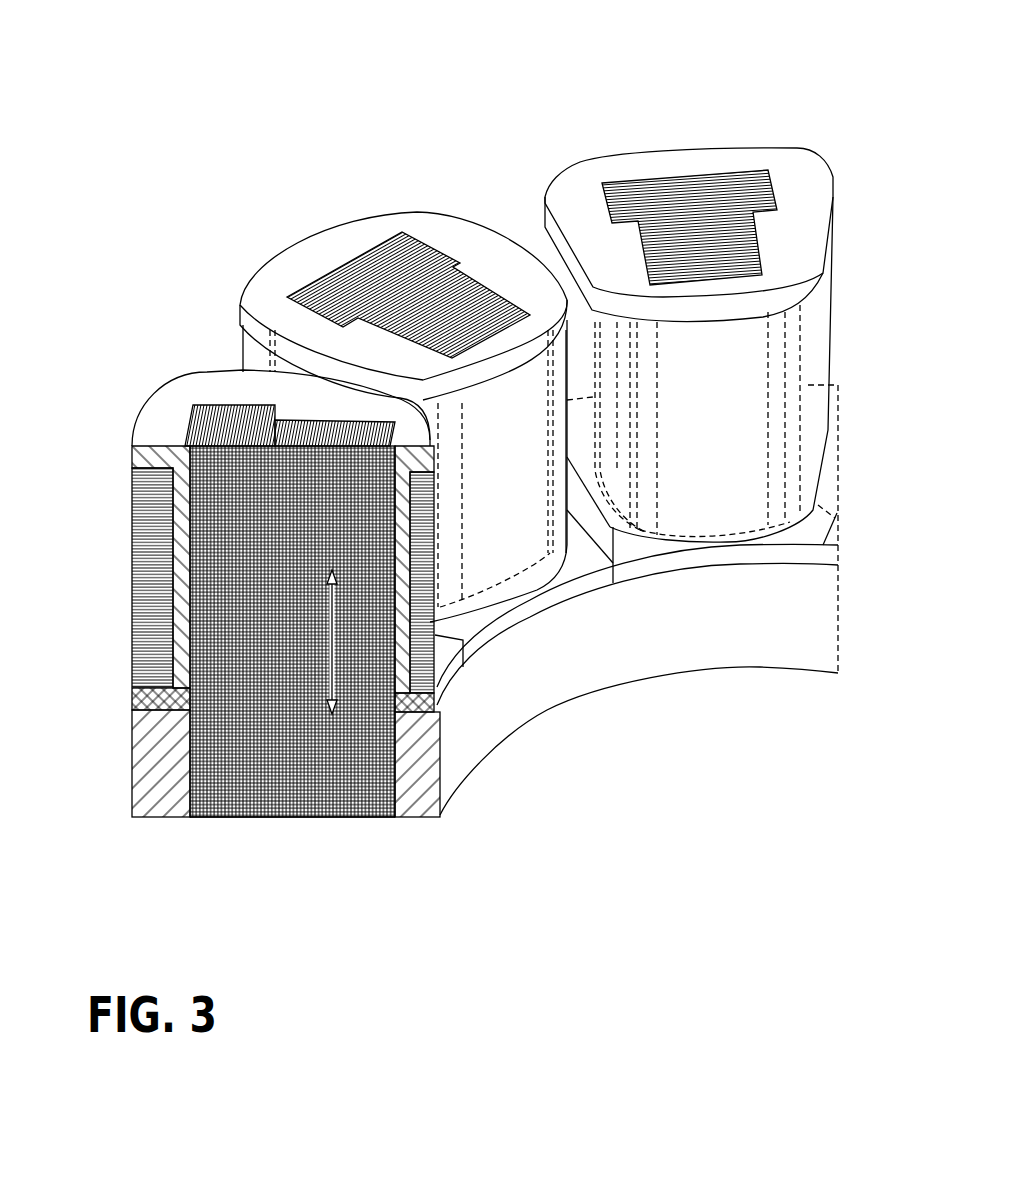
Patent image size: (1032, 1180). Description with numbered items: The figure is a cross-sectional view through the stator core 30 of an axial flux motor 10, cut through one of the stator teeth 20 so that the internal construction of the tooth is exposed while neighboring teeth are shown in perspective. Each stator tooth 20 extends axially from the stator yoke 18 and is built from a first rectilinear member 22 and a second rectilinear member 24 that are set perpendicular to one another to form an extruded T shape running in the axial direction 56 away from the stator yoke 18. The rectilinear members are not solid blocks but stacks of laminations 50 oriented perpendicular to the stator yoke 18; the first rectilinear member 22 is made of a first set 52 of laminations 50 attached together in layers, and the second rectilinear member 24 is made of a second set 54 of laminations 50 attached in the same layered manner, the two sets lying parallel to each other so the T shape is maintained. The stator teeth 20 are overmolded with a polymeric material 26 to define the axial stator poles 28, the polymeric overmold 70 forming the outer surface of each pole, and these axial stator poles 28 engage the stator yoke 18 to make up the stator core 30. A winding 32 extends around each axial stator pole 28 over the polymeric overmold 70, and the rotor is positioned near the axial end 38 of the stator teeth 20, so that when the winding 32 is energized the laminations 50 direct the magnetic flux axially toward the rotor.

The axial flux motor 10 is at (593, 113).
The stator yoke 18 is at (165, 787).
The stator tooth 20 is at (262, 829).
The first rectilinear member 22 is at (190, 525).
The second rectilinear member 24 is at (385, 819).
The polymeric material 26 is at (437, 688).
The axial stator pole 28 is at (822, 149).
The stator core 30 is at (759, 681).
The winding 32 is at (157, 613).
The axial end 38 is at (800, 207).
The lamination 50 is at (227, 819).
The first set of laminations 52 is at (218, 403).
The second set of laminations 54 is at (330, 418).
The axial direction 56 is at (338, 718).
The polymeric overmold 70 is at (557, 167).